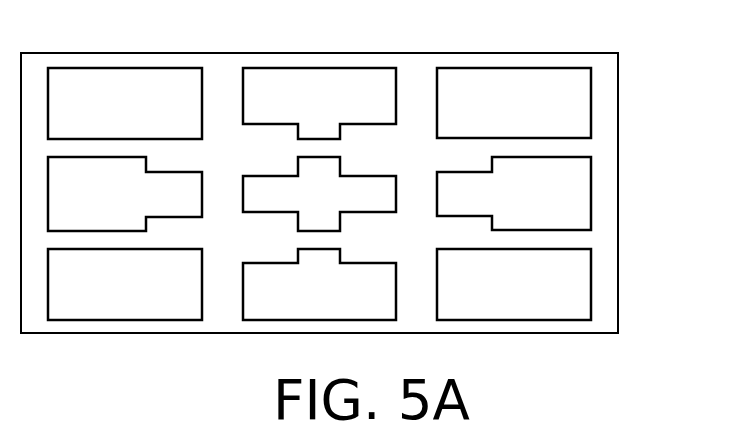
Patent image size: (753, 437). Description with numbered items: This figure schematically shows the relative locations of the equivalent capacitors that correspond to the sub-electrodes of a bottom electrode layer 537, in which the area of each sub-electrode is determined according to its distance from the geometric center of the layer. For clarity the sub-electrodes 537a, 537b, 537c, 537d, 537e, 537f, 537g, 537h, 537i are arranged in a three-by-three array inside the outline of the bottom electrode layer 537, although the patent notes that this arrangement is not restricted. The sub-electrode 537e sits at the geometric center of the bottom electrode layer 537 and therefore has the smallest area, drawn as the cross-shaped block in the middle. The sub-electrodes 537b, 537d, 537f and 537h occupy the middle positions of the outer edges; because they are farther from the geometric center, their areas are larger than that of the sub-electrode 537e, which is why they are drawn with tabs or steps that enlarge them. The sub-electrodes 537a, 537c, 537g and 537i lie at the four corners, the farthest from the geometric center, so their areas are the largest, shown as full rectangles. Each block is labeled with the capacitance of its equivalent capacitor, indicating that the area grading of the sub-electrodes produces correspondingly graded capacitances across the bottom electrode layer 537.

The bottom electrode layer 537 is at (619, 237).
The sub-electrode 537a is at (577, 116).
The sub-electrode 537b is at (382, 114).
The sub-electrode 537c is at (185, 115).
The sub-electrode 537d is at (575, 206).
The sub-electrode 537e is at (382, 205).
The sub-electrode 537f is at (178, 207).
The sub-electrode 537g is at (577, 296).
The sub-electrode 537h is at (382, 296).
The sub-electrode 537i is at (177, 297).